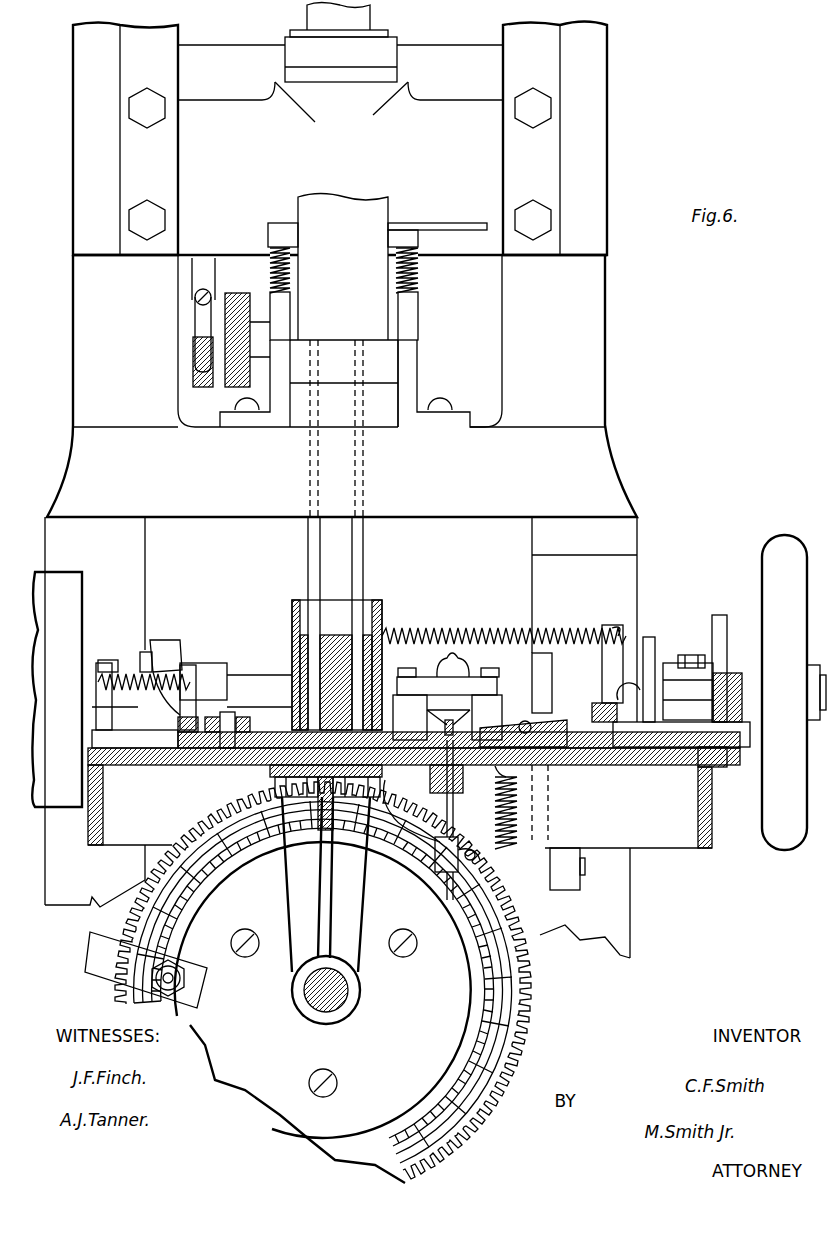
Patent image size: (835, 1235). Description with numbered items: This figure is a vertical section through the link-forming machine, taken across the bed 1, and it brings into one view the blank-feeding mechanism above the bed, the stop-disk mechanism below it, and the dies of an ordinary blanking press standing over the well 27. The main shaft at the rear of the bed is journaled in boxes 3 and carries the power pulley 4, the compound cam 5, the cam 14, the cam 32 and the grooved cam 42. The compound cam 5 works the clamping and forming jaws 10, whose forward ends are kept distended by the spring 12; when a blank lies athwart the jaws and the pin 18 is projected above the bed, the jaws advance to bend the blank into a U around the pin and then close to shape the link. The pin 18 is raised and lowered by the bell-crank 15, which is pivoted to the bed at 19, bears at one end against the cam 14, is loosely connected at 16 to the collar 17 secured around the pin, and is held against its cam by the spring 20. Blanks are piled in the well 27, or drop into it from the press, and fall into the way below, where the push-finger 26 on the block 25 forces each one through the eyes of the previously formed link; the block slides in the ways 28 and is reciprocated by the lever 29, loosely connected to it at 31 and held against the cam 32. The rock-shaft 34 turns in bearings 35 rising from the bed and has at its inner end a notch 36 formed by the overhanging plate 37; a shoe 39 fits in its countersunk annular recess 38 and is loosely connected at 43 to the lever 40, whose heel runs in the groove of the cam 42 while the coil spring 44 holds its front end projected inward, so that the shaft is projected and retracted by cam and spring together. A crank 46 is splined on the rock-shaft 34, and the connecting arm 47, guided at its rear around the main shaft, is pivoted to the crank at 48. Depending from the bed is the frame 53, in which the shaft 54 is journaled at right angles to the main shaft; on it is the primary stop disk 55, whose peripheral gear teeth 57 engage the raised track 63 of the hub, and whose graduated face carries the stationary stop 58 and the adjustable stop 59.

The bed 1 is at (386, 852).
The boxes 3 is at (688, 691).
The power pulley 4 is at (334, 454).
The compound cam 5 is at (455, 670).
The clamping and forming jaws 10 is at (447, 717).
The spring 12 is at (448, 682).
The cam 14 is at (532, 668).
The bell-crank 15 is at (540, 866).
The loose connection 16 is at (470, 862).
The collar 17 is at (435, 855).
The pin 18 is at (436, 815).
The pivot 19 is at (585, 868).
The spring 20 is at (492, 813).
The block 25 is at (185, 750).
The push-finger 26 is at (440, 750).
The well 27 is at (292, 603).
The ways 28 is at (192, 706).
The lever 29 is at (172, 650).
The loose connection 31 is at (228, 750).
The cam 32 is at (140, 660).
The rock-shaft 34 is at (681, 734).
The bearings 35 is at (688, 696).
The notch 36 is at (490, 765).
The overhanging plate 37 is at (520, 750).
The countersunk annular recess 38 is at (610, 750).
The shoe 39 is at (600, 750).
The lever 40 is at (694, 654).
The cam 42 is at (640, 675).
The loose connection 43 is at (596, 708).
The coil spring 44 is at (465, 635).
The crank 46 is at (742, 695).
The connecting arm 47 is at (714, 625).
The pivot 48 is at (728, 680).
The frame 53 is at (326, 910).
The shaft 54 is at (348, 1000).
The primary stop disk 55 is at (323, 992).
The gear teeth 57 is at (525, 1068).
The stop 58 is at (412, 811).
The stop 59 is at (146, 970).
The track 63 is at (414, 748).